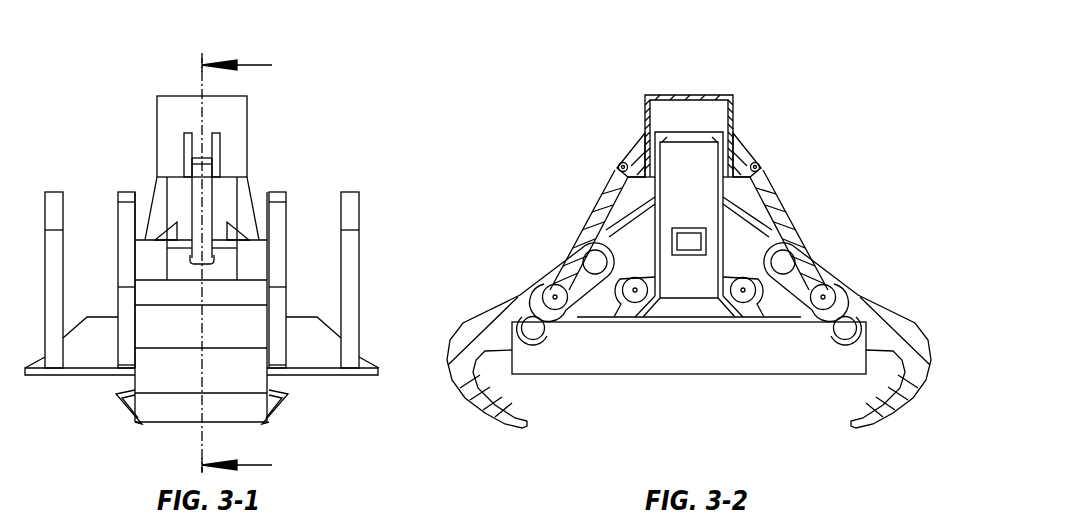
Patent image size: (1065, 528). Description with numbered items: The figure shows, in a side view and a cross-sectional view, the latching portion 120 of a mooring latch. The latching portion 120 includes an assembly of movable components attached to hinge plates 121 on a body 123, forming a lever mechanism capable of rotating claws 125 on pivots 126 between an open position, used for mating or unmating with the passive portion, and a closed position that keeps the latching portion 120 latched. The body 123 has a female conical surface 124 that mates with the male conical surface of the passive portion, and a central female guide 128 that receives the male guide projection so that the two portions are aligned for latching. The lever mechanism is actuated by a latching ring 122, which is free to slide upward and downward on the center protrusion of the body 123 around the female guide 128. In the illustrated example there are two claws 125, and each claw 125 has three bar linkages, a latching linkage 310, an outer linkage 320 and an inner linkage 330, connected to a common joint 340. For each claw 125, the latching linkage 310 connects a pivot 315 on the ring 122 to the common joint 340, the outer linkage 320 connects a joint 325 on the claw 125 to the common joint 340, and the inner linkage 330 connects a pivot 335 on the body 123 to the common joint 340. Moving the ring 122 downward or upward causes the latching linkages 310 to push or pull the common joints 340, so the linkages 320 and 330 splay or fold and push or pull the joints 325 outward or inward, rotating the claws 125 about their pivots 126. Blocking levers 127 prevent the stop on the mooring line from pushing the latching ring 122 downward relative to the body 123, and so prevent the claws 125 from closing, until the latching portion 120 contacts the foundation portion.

In FIG. 3-1, the latching portion 120 is at (126, 41).
In FIG. 3-2, the latching portion 120 is at (636, 41).
In FIG. 3-1, the hinge plates 121 is at (118, 203).
In FIG. 3-1, the latching ring 122 is at (178, 95).
In FIG. 3-2, the latching ring 122 is at (732, 115).
In FIG. 3-1, the body 123 is at (295, 317).
In FIG. 3-2, the body 123 is at (694, 418).
In FIG. 3-1, the female conical surface 124 is at (306, 396).
In FIG. 3-1, the claws 125 is at (173, 413).
In FIG. 3-2, the claws 125 is at (485, 320).
In FIG. 3-2, the pivots 126 is at (537, 340).
In FIG. 3-1, the blocking levers 127 is at (160, 190).
In FIG. 3-2, the blocking levers 127 is at (689, 240).
In FIG. 3-2, the female guide 128 is at (704, 205).
In FIG. 3-2, the latching linkage 310 is at (597, 220).
In FIG. 3-2, the pivot 315 is at (618, 163).
In FIG. 3-2, the outer linkage 320 is at (553, 278).
In FIG. 3-2, the joint 325 is at (823, 298).
In FIG. 3-2, the inner linkage 330 is at (618, 268).
In FIG. 3-2, the pivot 335 is at (635, 297).
In FIG. 3-2, the common joint 340 is at (587, 257).